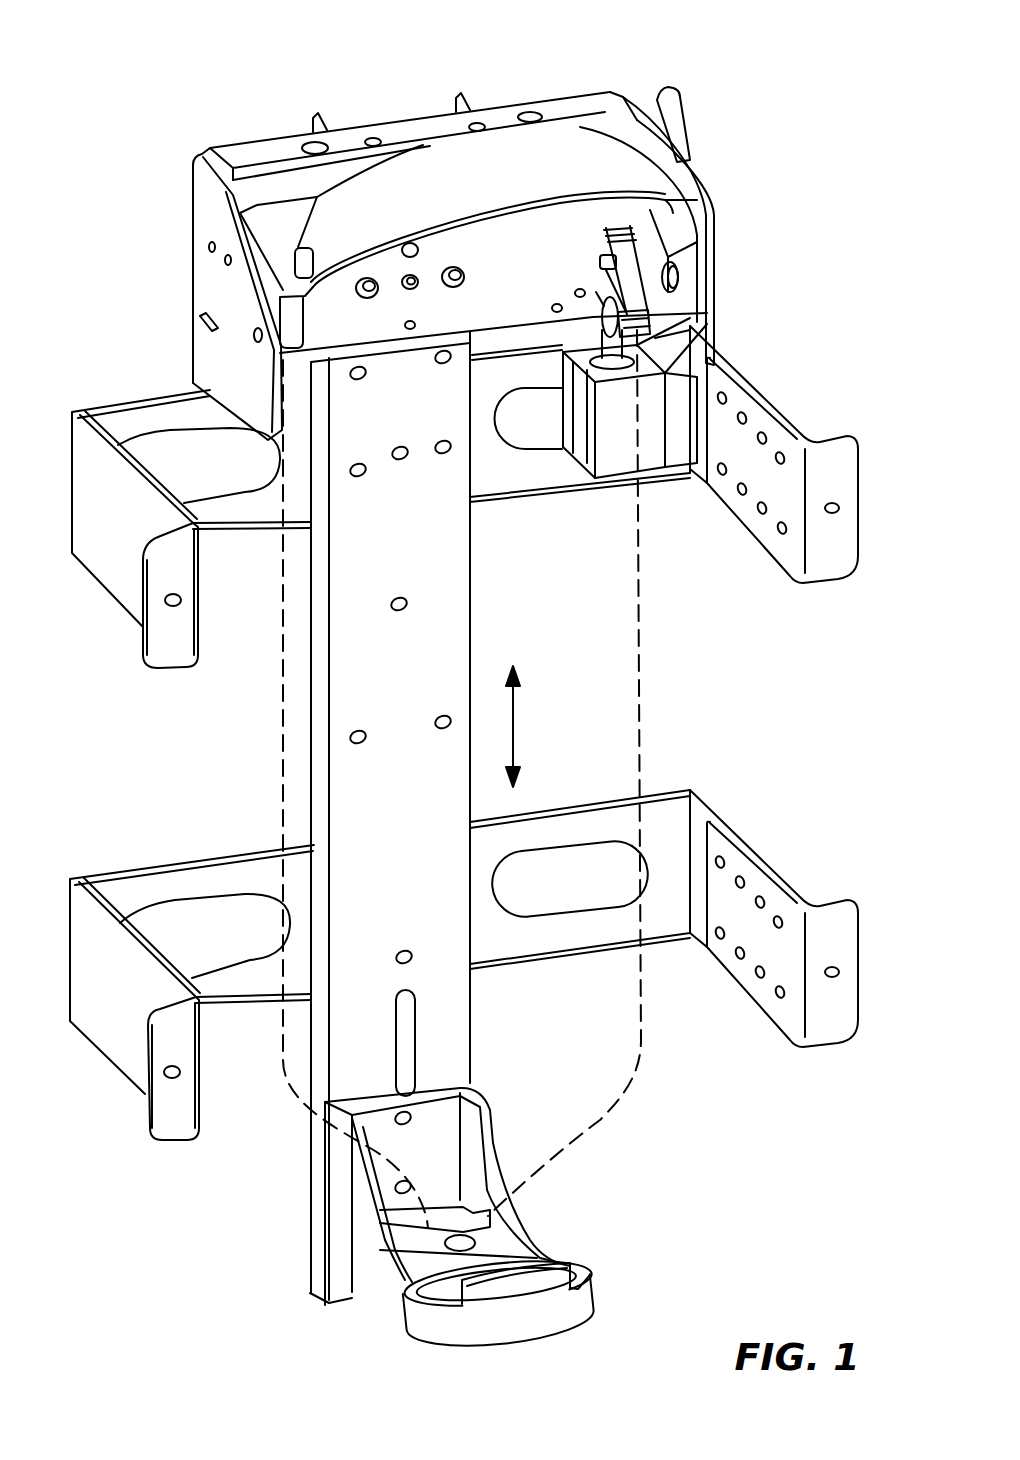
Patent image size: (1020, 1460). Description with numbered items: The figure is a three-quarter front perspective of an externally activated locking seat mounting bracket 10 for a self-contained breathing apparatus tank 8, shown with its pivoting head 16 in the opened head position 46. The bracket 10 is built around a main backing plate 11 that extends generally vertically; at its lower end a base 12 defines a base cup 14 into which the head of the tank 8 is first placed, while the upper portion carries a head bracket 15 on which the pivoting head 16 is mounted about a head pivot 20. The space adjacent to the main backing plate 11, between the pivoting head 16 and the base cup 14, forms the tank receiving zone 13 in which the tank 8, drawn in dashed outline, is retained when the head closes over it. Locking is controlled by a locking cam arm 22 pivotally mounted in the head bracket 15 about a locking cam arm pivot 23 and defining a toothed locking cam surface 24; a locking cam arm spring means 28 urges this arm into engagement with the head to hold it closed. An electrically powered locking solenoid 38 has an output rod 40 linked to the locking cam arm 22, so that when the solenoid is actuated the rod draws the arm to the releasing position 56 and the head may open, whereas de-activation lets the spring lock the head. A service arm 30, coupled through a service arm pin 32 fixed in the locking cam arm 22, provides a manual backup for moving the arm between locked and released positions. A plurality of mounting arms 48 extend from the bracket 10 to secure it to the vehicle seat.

The tank 8 is at (297, 1065).
The bracket 10 is at (467, 618).
The main backing plate 11 is at (411, 554).
The base 12 is at (497, 1133).
The tank receiving zone 13 is at (517, 726).
The base cup 14 is at (453, 1293).
The head bracket 15 is at (203, 255).
The pivoting head 16 is at (547, 133).
The head pivot 20 is at (673, 273).
The locking cam arm 22 is at (562, 283).
The locking cam arm pivot 23 is at (596, 313).
The locking cam surface 24 is at (628, 247).
The locking cam arm spring means 28 is at (668, 326).
The service arm 30 is at (672, 90).
The service arm pin 32 is at (600, 258).
The locking solenoid 38 is at (604, 426).
The output rod 40 is at (716, 340).
The opened head position 46 is at (430, 158).
The mounting arms 48 is at (170, 673).
The releasing position 56 is at (602, 225).